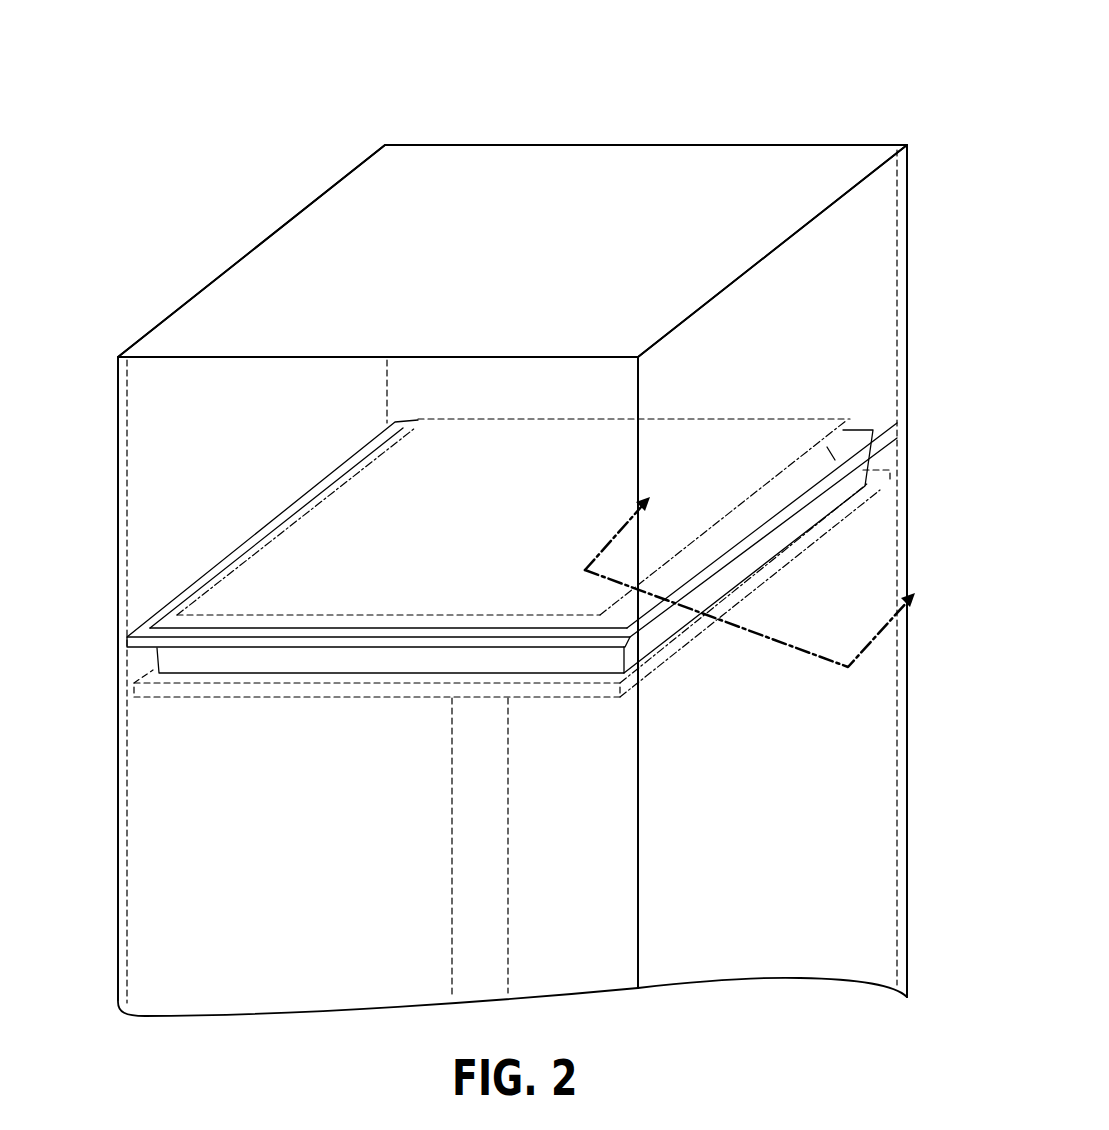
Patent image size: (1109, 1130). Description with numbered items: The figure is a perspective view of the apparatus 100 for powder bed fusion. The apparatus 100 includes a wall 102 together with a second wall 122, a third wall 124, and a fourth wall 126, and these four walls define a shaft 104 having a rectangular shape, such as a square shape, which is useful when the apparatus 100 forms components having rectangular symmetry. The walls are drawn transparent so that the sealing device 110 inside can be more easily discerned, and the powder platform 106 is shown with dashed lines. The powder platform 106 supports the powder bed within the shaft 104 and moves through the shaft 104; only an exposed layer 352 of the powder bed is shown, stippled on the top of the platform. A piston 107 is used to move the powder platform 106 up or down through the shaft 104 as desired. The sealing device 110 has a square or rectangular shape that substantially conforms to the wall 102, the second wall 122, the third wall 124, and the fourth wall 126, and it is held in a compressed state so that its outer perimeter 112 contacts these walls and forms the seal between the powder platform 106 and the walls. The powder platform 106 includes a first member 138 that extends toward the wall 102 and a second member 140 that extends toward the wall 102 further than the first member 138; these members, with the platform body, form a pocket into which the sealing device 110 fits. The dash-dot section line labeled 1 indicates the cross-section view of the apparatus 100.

The apparatus 100 is at (763, 90).
The wall 102 is at (885, 350).
The shaft 104 is at (835, 822).
The powder platform 106 is at (754, 438).
The piston 107 is at (488, 870).
The sealing device 110 is at (292, 665).
The outer perimeter 112 is at (263, 528).
The second wall 122 is at (602, 850).
The third wall 124 is at (117, 473).
The fourth wall 126 is at (685, 145).
The first member 138 is at (722, 523).
The second member 140 is at (168, 688).
The exposed layer 352 is at (535, 145).
The section line 1- 1 is at (757, 566).